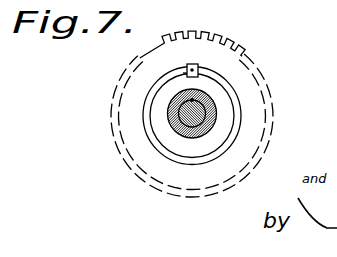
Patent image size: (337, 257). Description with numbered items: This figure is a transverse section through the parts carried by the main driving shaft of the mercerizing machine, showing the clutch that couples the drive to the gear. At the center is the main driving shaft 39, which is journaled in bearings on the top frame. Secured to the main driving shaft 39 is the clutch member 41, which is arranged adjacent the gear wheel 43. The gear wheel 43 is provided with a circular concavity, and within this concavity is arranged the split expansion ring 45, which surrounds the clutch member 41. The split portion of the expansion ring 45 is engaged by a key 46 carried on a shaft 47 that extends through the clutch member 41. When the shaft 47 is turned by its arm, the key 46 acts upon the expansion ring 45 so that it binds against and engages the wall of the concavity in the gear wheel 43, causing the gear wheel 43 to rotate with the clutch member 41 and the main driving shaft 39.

The main driving shaft 39 is at (203, 119).
The clutch member 41 is at (214, 105).
The gear wheel 43 is at (238, 49).
The split expansion ring 45 is at (148, 123).
The key 46 is at (183, 73).
The shaft 47 is at (189, 66).